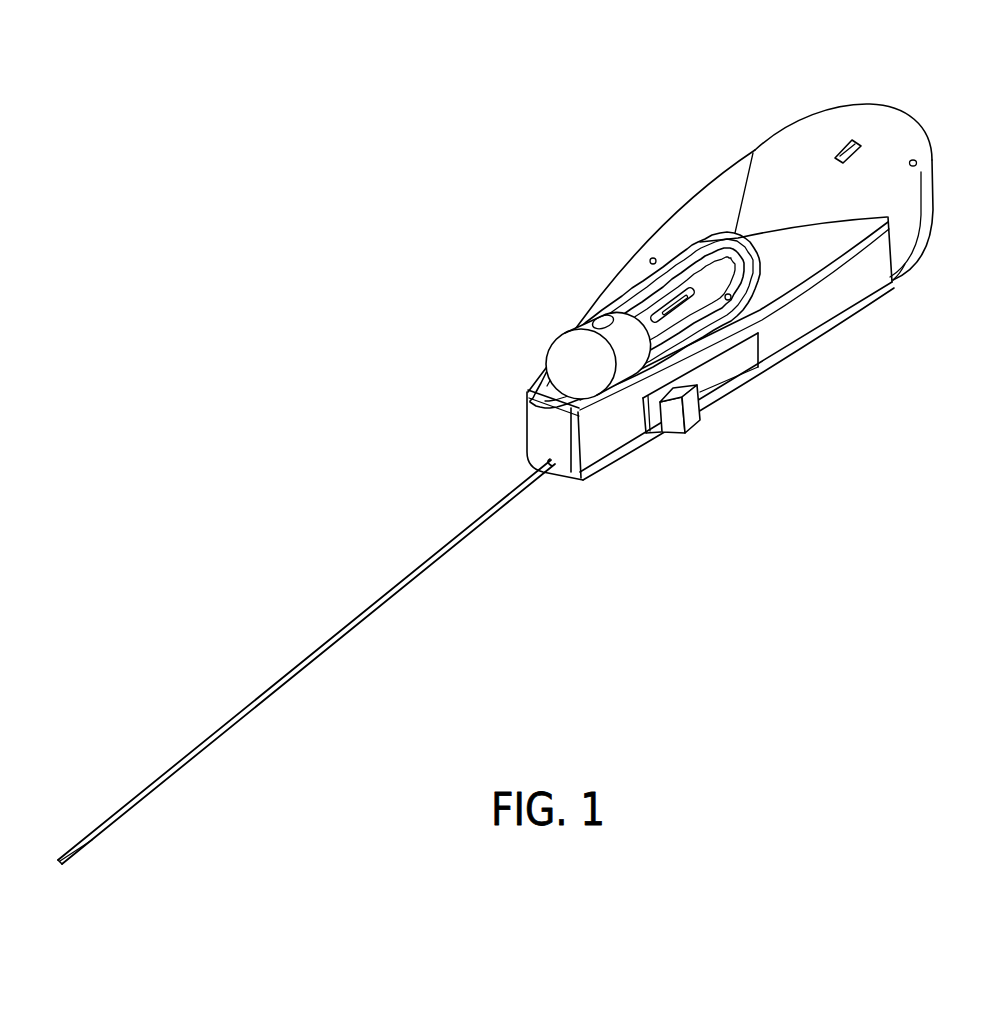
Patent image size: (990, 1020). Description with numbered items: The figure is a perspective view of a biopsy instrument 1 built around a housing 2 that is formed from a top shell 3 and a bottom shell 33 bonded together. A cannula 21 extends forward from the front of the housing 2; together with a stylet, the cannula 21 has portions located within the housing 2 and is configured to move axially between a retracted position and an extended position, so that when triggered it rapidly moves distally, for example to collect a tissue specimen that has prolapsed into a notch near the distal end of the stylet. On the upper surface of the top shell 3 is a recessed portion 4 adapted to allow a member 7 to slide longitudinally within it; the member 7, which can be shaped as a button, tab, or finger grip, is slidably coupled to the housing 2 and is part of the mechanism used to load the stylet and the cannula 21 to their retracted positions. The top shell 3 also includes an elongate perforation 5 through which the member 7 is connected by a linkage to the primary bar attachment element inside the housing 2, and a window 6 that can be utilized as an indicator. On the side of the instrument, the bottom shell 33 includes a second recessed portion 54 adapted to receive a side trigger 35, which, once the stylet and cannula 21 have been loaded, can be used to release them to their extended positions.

The biopsy instrument 1 is at (628, 210).
The housing 2 is at (779, 132).
The top shell 3 is at (896, 106).
The recessed portion 4 is at (706, 278).
The elongate perforation 5 is at (666, 303).
The window 6 is at (845, 165).
The member 7 is at (576, 347).
The cannula 21 is at (440, 556).
The bottom shell 33 is at (897, 278).
The side trigger 35 is at (676, 440).
The second recessed portion 54 is at (700, 395).